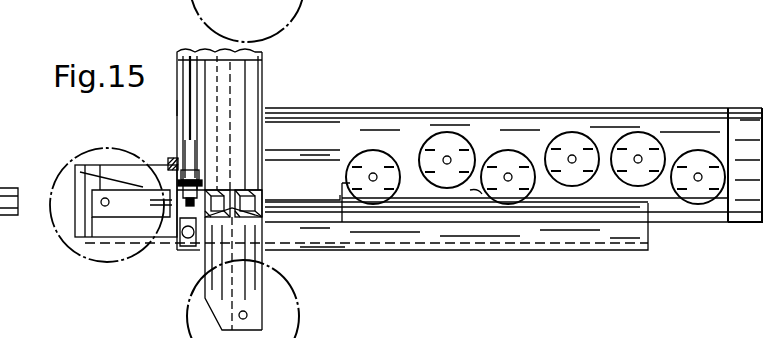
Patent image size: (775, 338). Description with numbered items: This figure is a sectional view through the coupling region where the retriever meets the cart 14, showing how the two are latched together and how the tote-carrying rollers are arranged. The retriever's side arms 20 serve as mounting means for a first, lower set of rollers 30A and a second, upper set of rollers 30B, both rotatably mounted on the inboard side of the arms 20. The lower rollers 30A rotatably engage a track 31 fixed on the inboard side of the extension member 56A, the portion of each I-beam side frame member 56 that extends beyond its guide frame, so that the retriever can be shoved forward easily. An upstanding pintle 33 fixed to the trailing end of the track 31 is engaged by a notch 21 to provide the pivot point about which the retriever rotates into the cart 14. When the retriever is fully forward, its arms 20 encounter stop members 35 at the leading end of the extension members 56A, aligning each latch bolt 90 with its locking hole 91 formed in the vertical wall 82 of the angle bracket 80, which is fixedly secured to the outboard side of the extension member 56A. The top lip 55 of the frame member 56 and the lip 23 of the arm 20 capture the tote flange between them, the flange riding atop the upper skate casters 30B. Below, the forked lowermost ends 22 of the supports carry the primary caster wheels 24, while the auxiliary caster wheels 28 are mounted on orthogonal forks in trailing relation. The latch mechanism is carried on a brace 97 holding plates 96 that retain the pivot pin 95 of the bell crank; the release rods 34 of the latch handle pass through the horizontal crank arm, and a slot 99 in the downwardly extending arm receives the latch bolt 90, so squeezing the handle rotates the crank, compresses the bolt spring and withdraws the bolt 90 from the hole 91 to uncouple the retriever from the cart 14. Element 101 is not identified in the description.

The cart 14 is at (190, 33).
The arms 20 is at (722, 128).
The notch 21 is at (477, 190).
The forked lowermost ends 22 is at (252, 298).
The lip 23 is at (498, 110).
The primary caster wheels 24 is at (302, 13).
The auxiliary caster wheels 28 is at (70, 150).
The first, lower set of rollers 30A is at (368, 150).
The second, upper set of rollers 30B is at (430, 142).
The track 31 is at (452, 210).
The pintle 33 is at (342, 180).
The release rods 34 is at (262, 58).
The stop members 35 is at (720, 202).
The top lip 55 is at (762, 120).
The side frame members 56 is at (748, 128).
The extension member 56A is at (697, 210).
The angle bracket 80 is at (105, 255).
The vertical wall 82 is at (86, 230).
The latch bolt 90 is at (178, 238).
The locking hole 91 is at (180, 252).
The pivot pin 95 is at (150, 162).
The plates 96 is at (174, 158).
The brace 97 is at (182, 107).
The slot 99 is at (80, 172).
The bearing blocks 101 is at (232, 165).